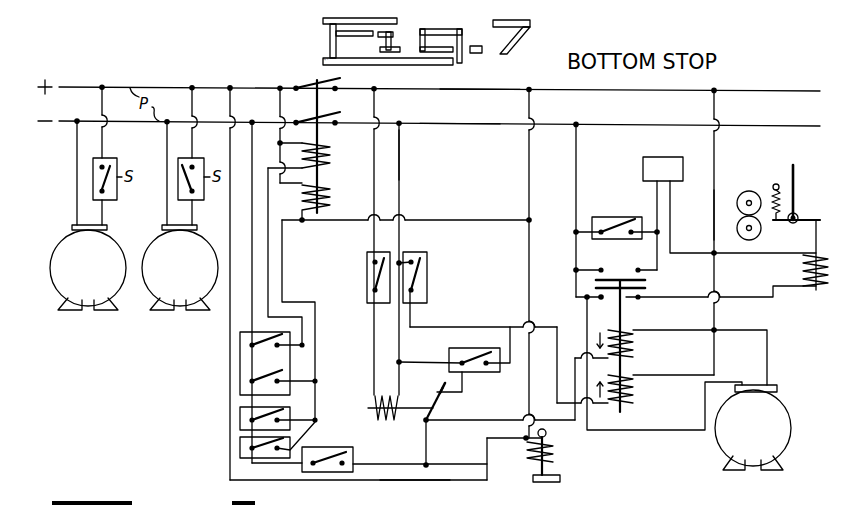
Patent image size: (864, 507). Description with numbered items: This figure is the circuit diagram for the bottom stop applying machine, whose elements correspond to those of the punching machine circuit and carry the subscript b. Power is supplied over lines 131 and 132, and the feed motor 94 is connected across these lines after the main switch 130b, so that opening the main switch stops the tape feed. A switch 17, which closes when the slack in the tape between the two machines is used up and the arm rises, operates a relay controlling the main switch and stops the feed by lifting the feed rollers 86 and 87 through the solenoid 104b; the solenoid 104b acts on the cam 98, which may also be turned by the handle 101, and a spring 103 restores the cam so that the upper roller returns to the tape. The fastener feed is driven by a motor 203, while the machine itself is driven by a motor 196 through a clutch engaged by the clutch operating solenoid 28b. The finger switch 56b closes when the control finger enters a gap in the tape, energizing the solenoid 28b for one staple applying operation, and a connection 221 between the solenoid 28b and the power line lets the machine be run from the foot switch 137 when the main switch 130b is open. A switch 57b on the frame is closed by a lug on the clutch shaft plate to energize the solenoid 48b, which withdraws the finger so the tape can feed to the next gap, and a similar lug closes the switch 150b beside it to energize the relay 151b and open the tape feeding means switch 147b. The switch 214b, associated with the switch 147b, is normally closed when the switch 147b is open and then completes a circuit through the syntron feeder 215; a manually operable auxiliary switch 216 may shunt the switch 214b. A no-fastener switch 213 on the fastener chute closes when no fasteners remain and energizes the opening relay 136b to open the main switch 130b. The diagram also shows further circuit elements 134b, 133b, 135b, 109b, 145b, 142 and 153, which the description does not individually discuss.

The fastener feed motor 203 is at (93, 300).
The motor 196 is at (178, 300).
The main switch 130b is at (320, 107).
The relay coil 134b is at (326, 157).
The opening relay 136b is at (326, 187).
The line 131 is at (468, 89).
The line 132 is at (452, 124).
The conductor 153 is at (401, 155).
The switch 57b is at (367, 275).
The switch 150b is at (427, 275).
The on switch 133b is at (258, 344).
The off switch 135b is at (258, 380).
The no-fastener switch 213 is at (250, 418).
The switch 17 is at (264, 455).
The foot switch 137 is at (329, 470).
The connection 221 is at (416, 482).
The solenoid 48b is at (386, 425).
The finger switch 56b is at (436, 404).
The cover switch 109b is at (478, 373).
The clutch operating solenoid 28b is at (556, 452).
The syntron feeder 215 is at (670, 157).
The manually operable auxiliary switch 216 is at (615, 217).
The switch 214b is at (612, 277).
The tape feeding means switch 147b is at (628, 298).
The relay coil 145b is at (636, 348).
The relay 151b is at (636, 392).
The conductor 142 is at (713, 211).
The feed roller 86 is at (745, 181).
The feed roller 87 is at (741, 234).
The spring 103 is at (777, 184).
The handle 101 is at (796, 182).
The cam 98 is at (797, 225).
The solenoid 104b is at (817, 291).
The feed motor 94 is at (766, 440).